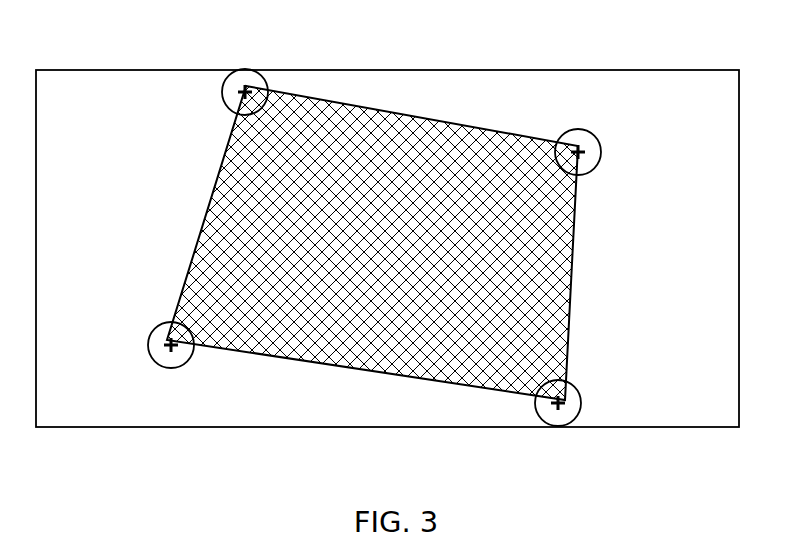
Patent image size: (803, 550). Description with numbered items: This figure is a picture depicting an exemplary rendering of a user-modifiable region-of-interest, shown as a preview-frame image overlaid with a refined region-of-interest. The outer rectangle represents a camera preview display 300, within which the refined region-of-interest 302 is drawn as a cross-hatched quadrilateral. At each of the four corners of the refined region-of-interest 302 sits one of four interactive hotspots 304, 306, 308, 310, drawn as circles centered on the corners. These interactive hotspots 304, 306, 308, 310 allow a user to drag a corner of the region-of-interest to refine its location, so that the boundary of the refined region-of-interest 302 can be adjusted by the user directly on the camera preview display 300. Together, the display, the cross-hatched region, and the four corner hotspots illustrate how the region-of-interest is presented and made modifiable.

The camera preview display 300 is at (724, 62).
The refined region-of-interest 302 is at (320, 121).
The interactive hotspot 304 is at (244, 67).
The interactive hotspot 306 is at (583, 126).
The interactive hotspot 308 is at (191, 369).
The interactive hotspot 310 is at (584, 415).